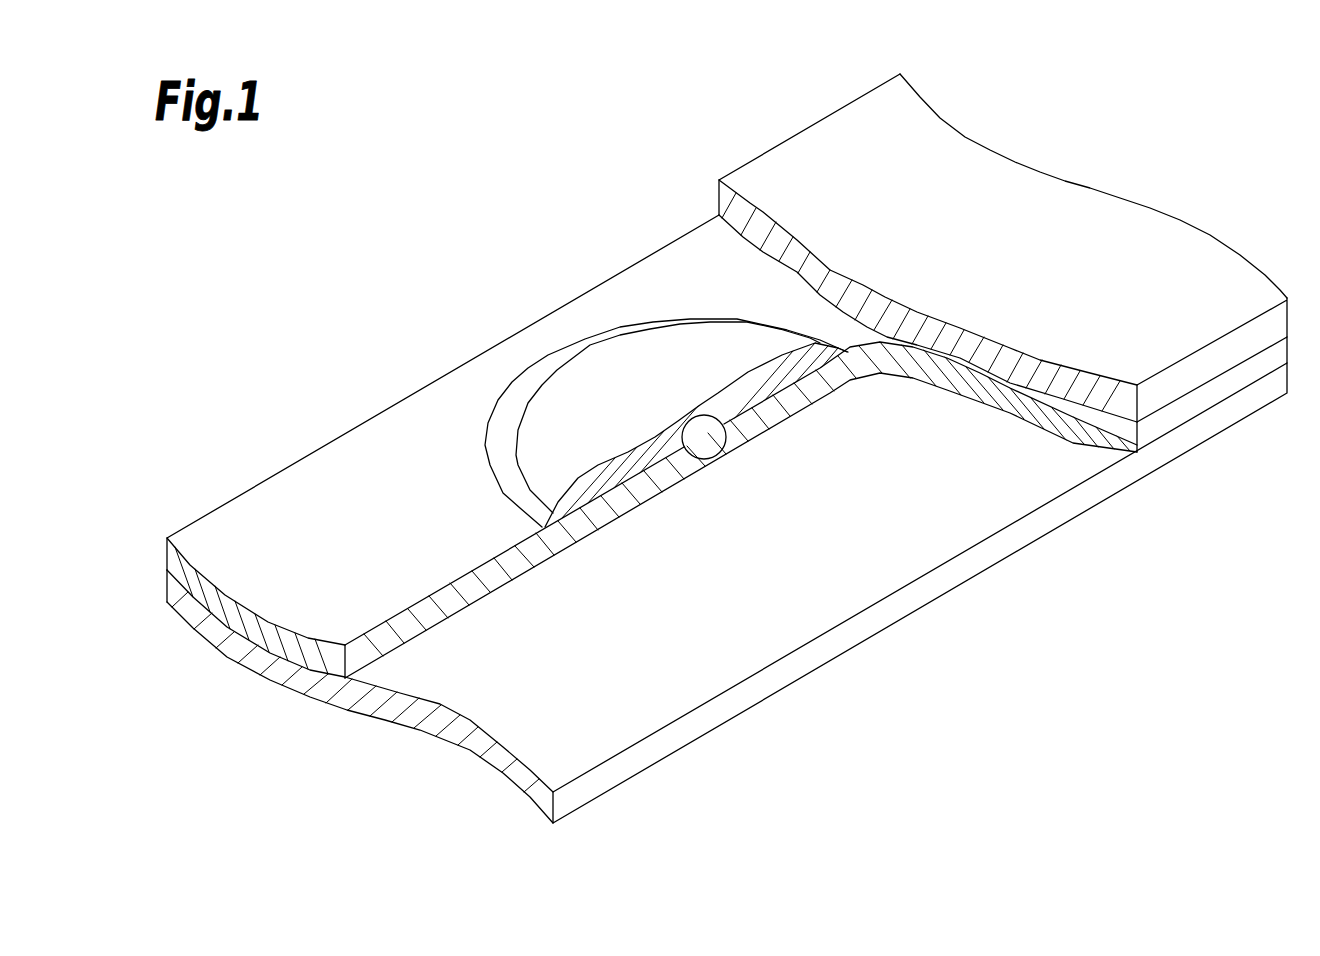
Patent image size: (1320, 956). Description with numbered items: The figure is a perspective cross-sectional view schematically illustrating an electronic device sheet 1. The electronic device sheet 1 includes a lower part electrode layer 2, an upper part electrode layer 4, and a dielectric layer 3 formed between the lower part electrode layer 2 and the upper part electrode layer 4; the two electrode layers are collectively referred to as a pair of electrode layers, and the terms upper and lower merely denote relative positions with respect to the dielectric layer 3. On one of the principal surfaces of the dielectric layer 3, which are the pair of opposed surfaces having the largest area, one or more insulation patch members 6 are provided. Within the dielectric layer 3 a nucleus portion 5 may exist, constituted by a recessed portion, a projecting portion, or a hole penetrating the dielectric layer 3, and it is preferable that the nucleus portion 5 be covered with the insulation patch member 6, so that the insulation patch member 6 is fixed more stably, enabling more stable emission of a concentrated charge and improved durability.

The electronic device sheet 1 is at (428, 199).
The lower part electrode layer 2 is at (745, 645).
The dielectric layer 3 is at (328, 492).
The upper part electrode layer 4 is at (1120, 227).
The nucleus portion 5 is at (703, 433).
The insulation patch member 6 is at (568, 398).